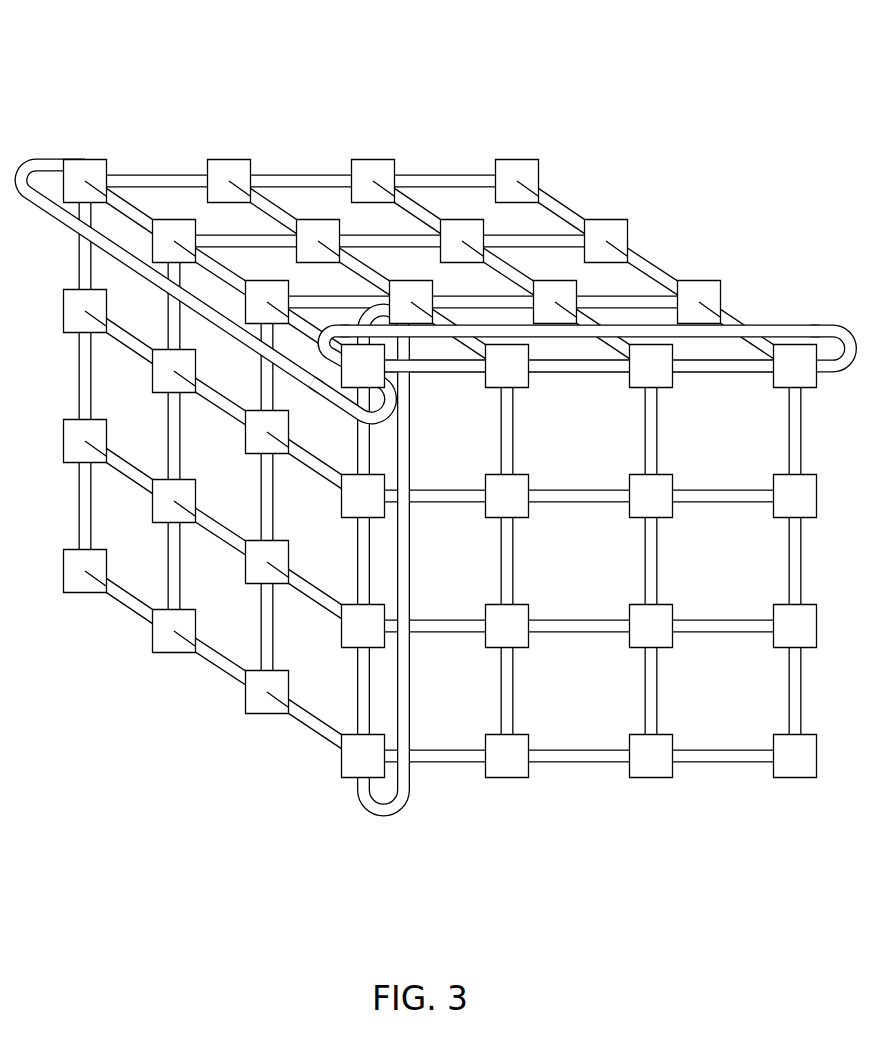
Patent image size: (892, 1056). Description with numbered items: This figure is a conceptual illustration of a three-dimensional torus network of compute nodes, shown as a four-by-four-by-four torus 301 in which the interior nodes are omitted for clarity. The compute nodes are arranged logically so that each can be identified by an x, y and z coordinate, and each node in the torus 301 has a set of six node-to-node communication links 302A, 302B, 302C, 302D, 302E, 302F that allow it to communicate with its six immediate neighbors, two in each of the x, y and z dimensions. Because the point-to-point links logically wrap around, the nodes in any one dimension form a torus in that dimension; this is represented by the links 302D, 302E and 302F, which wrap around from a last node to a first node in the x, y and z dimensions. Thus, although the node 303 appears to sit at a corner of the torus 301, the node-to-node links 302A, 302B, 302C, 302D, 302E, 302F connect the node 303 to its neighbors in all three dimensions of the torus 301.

The torus 301 is at (583, 88).
The node-to-node communication link 302A is at (428, 373).
The node-to-node communication link 302B is at (374, 452).
The node-to-node communication link 302C is at (314, 333).
The node-to-node communication link 302D is at (815, 324).
The node-to-node communication link 302E is at (385, 818).
The node-to-node communication link 302F is at (26, 153).
The node 303 is at (356, 372).